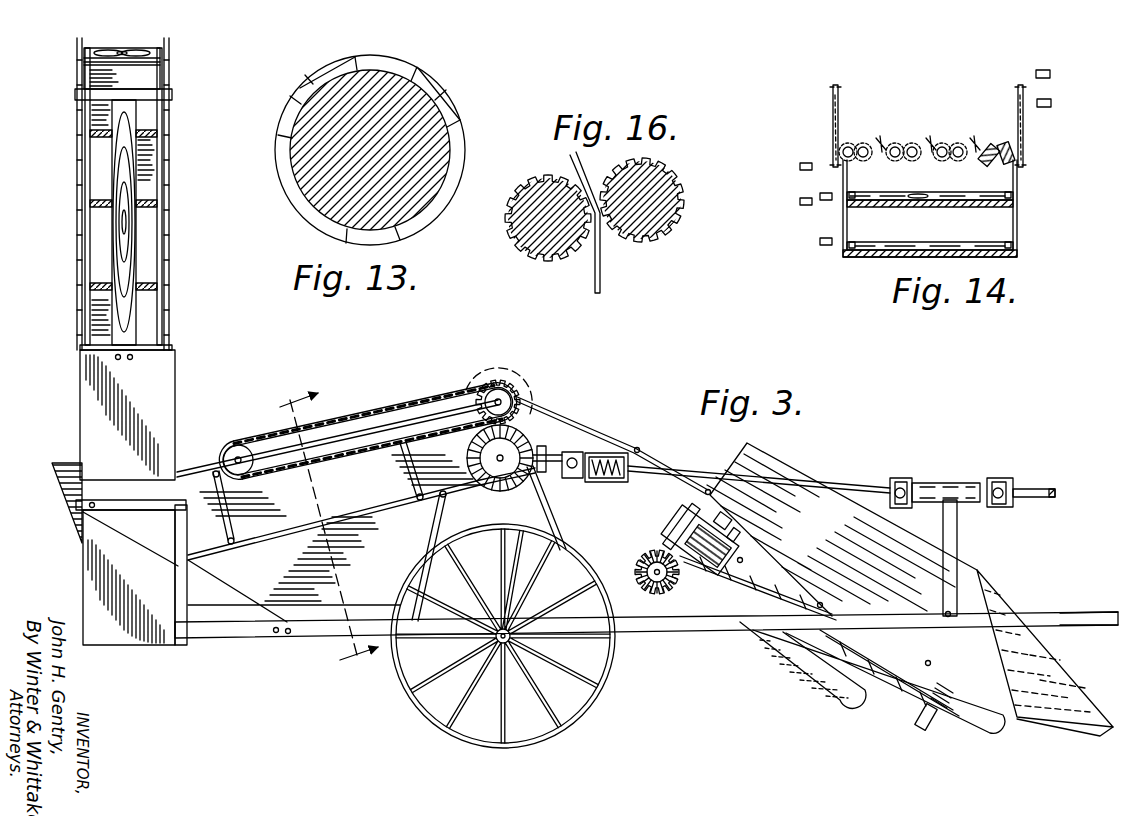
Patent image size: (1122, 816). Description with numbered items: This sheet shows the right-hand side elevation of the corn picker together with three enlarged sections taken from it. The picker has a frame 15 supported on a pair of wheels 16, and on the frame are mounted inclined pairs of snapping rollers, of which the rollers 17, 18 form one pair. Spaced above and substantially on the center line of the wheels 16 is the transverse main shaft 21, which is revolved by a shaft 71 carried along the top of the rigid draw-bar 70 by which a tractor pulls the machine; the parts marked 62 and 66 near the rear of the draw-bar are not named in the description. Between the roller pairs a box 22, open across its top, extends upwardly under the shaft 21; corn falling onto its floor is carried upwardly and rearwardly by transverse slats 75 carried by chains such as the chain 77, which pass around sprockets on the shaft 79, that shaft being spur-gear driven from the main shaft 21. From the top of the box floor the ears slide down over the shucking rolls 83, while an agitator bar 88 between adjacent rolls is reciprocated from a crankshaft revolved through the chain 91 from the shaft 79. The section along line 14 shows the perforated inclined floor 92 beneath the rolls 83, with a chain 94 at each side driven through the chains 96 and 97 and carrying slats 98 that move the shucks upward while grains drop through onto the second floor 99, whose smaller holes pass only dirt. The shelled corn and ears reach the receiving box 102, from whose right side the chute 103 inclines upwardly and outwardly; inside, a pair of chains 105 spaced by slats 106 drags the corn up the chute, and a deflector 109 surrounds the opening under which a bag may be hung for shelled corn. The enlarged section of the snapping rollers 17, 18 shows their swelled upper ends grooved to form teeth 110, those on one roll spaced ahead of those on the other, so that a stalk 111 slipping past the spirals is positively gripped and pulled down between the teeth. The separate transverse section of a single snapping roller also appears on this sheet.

In FIG. 3, the section line 14— 14 is at (311, 532).
In FIG. 3, the frame 15 is at (636, 628).
In FIG. 3, the wheels 16 is at (606, 683).
In FIG. 16, the snapping roller 17 is at (530, 260).
In FIG. 3, the snapping roller 18 is at (770, 580).
In FIG. 16, the snapping roller 18 is at (660, 240).
In FIG. 3, the main shaft 21 is at (498, 462).
In FIG. 3, the box 22 is at (812, 690).
In FIG. 3, the upright post 62 is at (963, 572).
In FIG. 3, the furrow opener plate 66 is at (1060, 682).
In FIG. 3, the draw-bar 70 is at (1120, 612).
In FIG. 3, the shaft 71 is at (700, 470).
In FIG. 3, the transverse slats 75 is at (575, 420).
In FIG. 3, the chain 77 is at (530, 400).
In FIG. 3, the shaft 79 is at (493, 385).
In FIG. 14, the shucking rolls 83 is at (998, 140).
In FIG. 14, the agitator bar 88 is at (974, 138).
In FIG. 3, the chain 91 is at (428, 398).
In FIG. 14, the chain 91 is at (1052, 76).
In FIG. 14, the inclined floor 92 is at (905, 210).
In FIG. 14, the chain 94 is at (856, 192).
In FIG. 14, the chain 96 is at (820, 200).
In FIG. 14, the chain 97 is at (800, 172).
In FIG. 14, the slats 98 is at (970, 195).
In FIG. 14, the second floor 99 is at (860, 257).
In FIG. 3, the receiving box 102 is at (168, 662).
In FIG. 3, the chute 103 is at (160, 321).
In FIG. 3, the chains 105 is at (92, 264).
In FIG. 3, the slats 106 is at (158, 296).
In FIG. 3, the deflector 109 is at (94, 423).
In FIG. 16, the teeth 110 is at (548, 172).
In FIG. 16, the stalk 111 is at (600, 276).